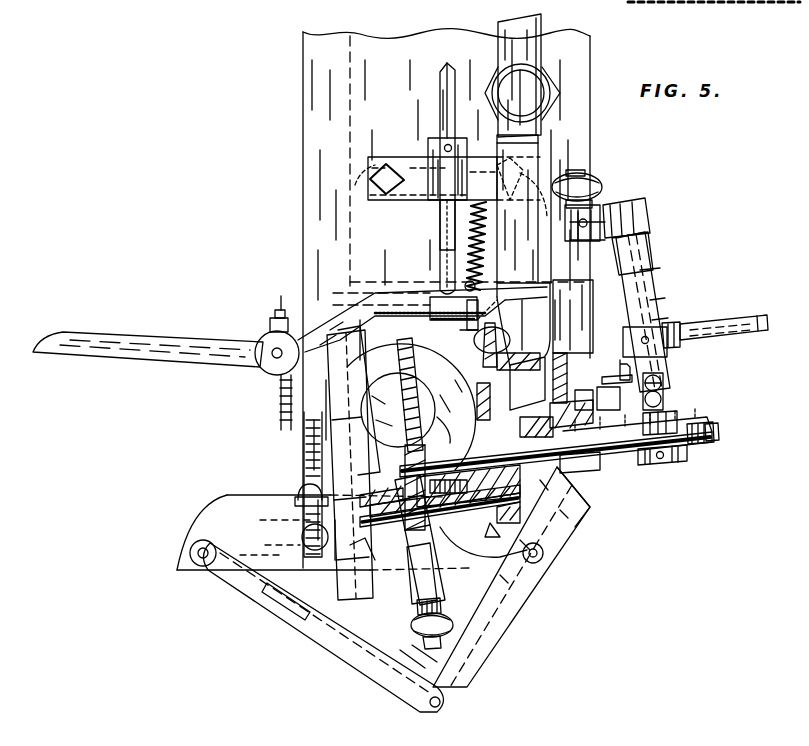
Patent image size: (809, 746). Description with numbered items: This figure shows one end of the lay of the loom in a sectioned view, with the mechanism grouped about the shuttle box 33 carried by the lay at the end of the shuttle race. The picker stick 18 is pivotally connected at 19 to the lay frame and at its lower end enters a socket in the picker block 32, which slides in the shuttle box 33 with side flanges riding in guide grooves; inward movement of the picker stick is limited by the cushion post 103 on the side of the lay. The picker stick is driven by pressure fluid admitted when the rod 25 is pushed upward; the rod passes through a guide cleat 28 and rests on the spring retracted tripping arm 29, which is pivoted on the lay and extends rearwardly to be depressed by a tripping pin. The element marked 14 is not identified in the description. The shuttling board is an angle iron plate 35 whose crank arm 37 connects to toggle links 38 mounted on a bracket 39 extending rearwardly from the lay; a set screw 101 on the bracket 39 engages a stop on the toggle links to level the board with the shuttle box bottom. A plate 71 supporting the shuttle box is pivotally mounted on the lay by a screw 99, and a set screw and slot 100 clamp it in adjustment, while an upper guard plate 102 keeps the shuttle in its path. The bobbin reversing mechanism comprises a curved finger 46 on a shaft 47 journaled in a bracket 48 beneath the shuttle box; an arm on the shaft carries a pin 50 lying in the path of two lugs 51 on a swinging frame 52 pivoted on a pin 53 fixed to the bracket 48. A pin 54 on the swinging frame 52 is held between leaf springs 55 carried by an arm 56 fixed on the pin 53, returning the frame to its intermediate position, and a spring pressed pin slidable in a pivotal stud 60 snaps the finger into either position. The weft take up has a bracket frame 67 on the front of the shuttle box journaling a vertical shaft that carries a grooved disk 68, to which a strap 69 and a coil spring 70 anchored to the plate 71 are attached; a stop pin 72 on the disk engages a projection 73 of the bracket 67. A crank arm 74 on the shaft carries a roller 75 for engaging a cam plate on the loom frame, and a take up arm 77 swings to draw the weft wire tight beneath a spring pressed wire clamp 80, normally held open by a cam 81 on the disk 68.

The support panel 14 is at (303, 156).
The picker stick 18 is at (538, 52).
The cushion post 103 is at (530, 96).
The rod 25 is at (447, 104).
The guide cleat 28 is at (440, 188).
The tripping arm 29 is at (150, 345).
The arm 56 is at (422, 319).
The set screw 101 is at (304, 470).
The brackets 39 is at (228, 503).
The toggle links 38 is at (440, 668).
The crank arms 37 is at (565, 537).
The angle iron plate 35 is at (590, 505).
The leaf springs 55 is at (340, 586).
The pin 50 is at (398, 434).
The screw 99 is at (411, 407).
The lugs 51 is at (398, 410).
The pivotal connection 19 is at (447, 411).
The shaft 47 is at (450, 430).
The shuttle boxes 33 is at (556, 443).
The bracket 48 is at (454, 505).
The curved finger 46 is at (570, 395).
The upper guard plate 102 is at (518, 345).
The plate 71 is at (448, 319).
The roller 75 is at (597, 180).
The crank arm 74 is at (618, 212).
The bracket frame 67 is at (650, 293).
The take up arm 77 is at (733, 325).
The wire clamp 80 is at (618, 378).
The picker blocks 32 is at (603, 378).
The projection 73 is at (665, 410).
The stop pin 72 is at (677, 420).
The cam 81 is at (715, 430).
The grooved disk 68 is at (714, 440).
The strap 69 is at (668, 463).
The coil spring 70 is at (565, 470).
The pin 53 is at (438, 547).
The set screw and slot 100 is at (524, 540).
The swinging frame 52 is at (440, 590).
The pin 54 is at (410, 585).
The pivotal stud 60 is at (411, 628).